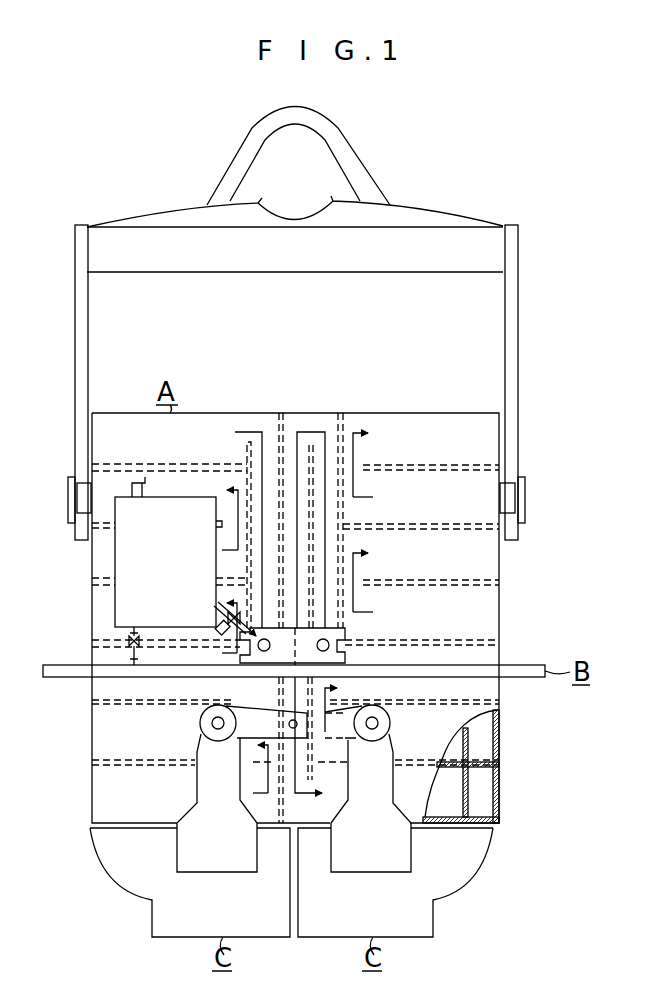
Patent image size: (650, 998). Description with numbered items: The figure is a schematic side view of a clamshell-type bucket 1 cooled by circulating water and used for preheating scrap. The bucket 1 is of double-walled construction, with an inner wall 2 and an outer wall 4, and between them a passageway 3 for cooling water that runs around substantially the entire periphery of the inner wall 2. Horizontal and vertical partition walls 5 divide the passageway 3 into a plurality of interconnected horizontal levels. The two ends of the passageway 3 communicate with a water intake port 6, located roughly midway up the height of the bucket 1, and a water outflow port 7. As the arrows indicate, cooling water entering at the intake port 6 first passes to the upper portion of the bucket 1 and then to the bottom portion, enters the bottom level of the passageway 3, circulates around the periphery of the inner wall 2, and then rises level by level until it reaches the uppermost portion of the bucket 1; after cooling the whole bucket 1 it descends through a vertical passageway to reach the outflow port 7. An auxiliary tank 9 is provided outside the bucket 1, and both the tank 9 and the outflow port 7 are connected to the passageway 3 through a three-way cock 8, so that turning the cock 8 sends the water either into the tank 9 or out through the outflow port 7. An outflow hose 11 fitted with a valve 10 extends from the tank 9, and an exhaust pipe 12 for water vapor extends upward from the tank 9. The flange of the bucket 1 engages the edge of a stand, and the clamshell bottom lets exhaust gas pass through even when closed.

The bucket 1 is at (296, 370).
The inner wall 2 is at (463, 798).
The passageway 3 is at (196, 456).
The outer wall 4 is at (92, 566).
The partition walls 5 is at (136, 466).
The water intake port 6 is at (317, 645).
The water outflow port 7 is at (270, 645).
The three-way cock 8 is at (221, 633).
The auxiliary tank 9 is at (115, 617).
The valve 10 is at (129, 641).
The outflow hose 11 is at (134, 660).
The exhaust pipe 12 is at (147, 481).